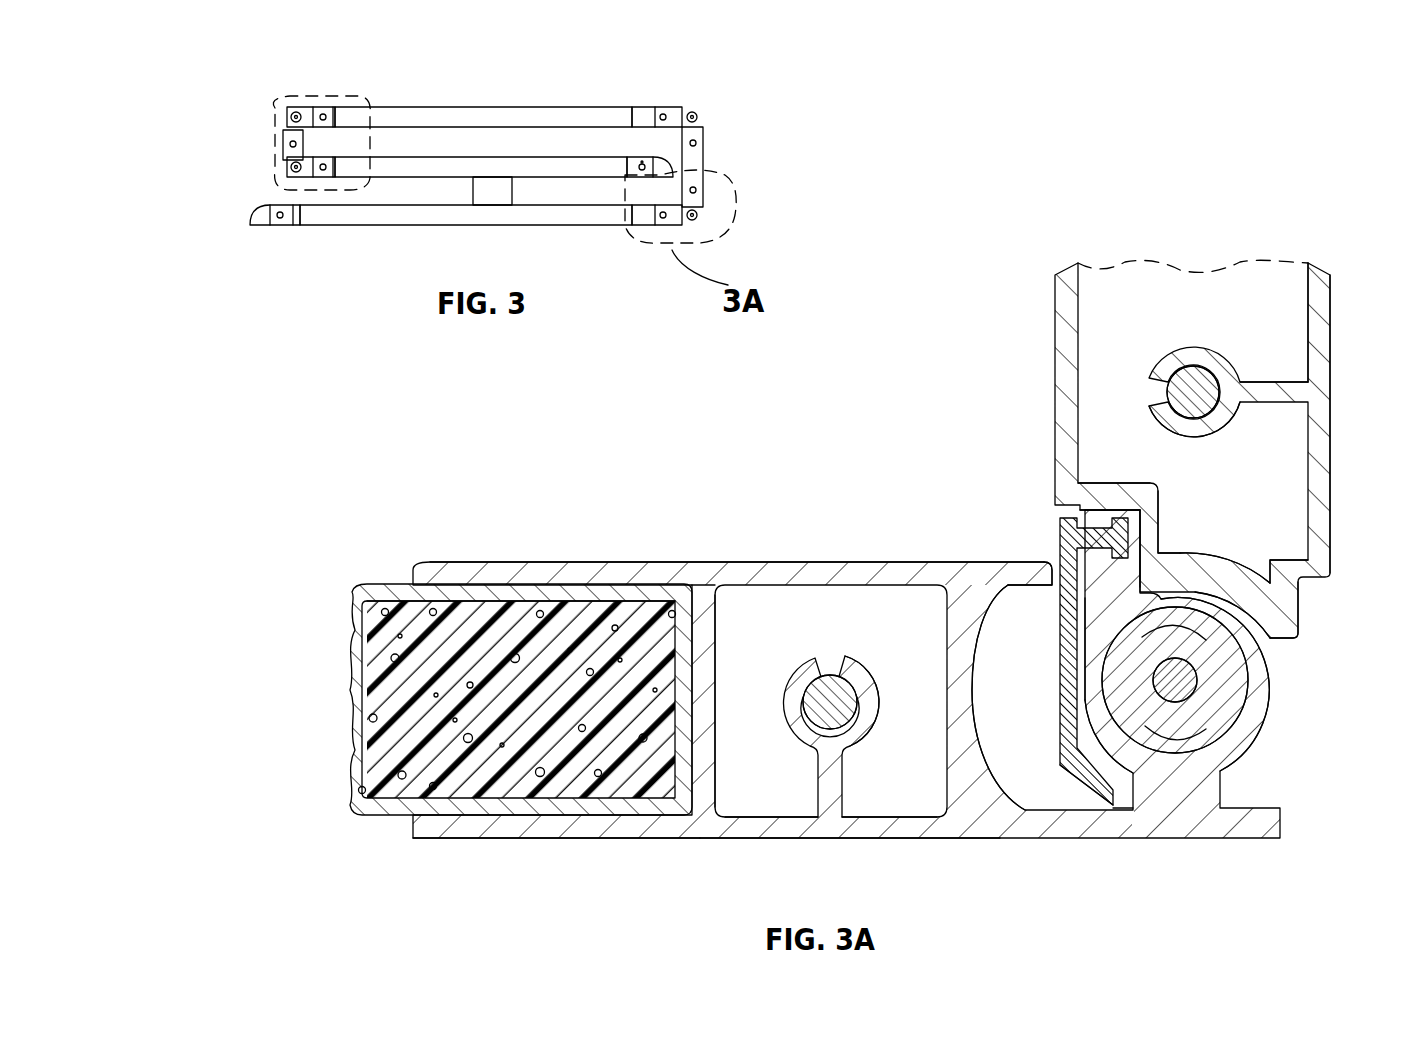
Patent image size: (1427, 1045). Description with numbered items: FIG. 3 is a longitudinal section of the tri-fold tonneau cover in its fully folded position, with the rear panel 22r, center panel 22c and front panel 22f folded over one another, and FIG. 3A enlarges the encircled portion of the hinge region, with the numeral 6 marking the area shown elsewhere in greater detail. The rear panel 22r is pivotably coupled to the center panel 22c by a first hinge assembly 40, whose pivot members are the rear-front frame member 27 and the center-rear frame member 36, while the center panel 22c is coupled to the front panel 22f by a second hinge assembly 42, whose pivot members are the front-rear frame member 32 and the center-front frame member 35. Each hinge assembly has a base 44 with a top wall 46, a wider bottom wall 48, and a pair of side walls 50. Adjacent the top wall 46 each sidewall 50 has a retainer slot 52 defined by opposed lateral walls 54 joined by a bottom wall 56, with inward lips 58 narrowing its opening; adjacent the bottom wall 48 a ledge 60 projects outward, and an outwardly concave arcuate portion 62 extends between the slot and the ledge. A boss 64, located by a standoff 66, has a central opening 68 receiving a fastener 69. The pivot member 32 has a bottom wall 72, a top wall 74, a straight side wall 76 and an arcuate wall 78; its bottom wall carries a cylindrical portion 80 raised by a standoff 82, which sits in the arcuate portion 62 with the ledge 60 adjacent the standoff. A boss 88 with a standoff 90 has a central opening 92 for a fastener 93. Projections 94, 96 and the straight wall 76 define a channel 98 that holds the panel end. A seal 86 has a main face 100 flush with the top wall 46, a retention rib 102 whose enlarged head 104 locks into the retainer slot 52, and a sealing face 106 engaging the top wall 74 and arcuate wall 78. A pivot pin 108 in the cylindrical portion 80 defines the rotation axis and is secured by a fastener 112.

In FIG. 3, the support system 6 is at (318, 95).
In FIG. 3, the center panel 22c is at (488, 105).
In FIG. 3, the rear panel 22r is at (551, 155).
In FIG. 3, the front panel 22f is at (381, 203).
In FIG. 3A, the front panel 22f is at (402, 583).
In FIG. 3, the rear-front frame member 27 is at (292, 183).
In FIG. 3, the front-rear frame member 32 is at (712, 223).
In FIG. 3A, the front-rear frame member 32 is at (757, 540).
In FIG. 3, the center-front frame member 35 is at (702, 101).
In FIG. 3, the center-rear frame member 36 is at (292, 103).
In FIG. 3, the first hinge assembly 40 is at (469, 150).
In FIG. 3, the second hinge assembly 42 is at (735, 168).
In FIG. 3, the base 44 is at (283, 143).
In FIG. 3A, the top wall 46 is at (1062, 300).
In FIG. 3A, the bottom wall 48 is at (1325, 295).
In FIG. 3A, the side walls 50 is at (1217, 560).
In FIG. 3A, the retainer slot 52 is at (1197, 680).
In FIG. 3A, the lateral walls 54 is at (1110, 493).
In FIG. 3A, the bottom wall 56 is at (1213, 546).
In FIG. 3A, the lips 58 is at (1058, 563).
In FIG. 3A, the ledge 60 is at (1280, 625).
In FIG. 3A, the arcuate portion 62 is at (1312, 528).
In FIG. 3A, the boss 64 is at (1150, 345).
In FIG. 3A, the standoff 66 is at (1300, 345).
In FIG. 3A, the central opening 68 is at (1175, 348).
In FIG. 3A, the fastener 69 is at (1196, 370).
In FIG. 3A, the bottom wall 72 is at (870, 822).
In FIG. 3A, the top wall 74 is at (836, 562).
In FIG. 3A, the straight side wall 76 is at (716, 752).
In FIG. 3A, the arcuate wall 78 is at (962, 737).
In FIG. 3A, the cylindrical portion 80 is at (1110, 622).
In FIG. 3A, the standoff 82 is at (1108, 795).
In FIG. 3A, the seal 86 is at (1048, 597).
In FIG. 3A, the boss 88 is at (882, 618).
In FIG. 3A, the standoff 90 is at (832, 790).
In FIG. 3A, the central opening 92 is at (832, 680).
In FIG. 3A, the fastener 93 is at (842, 722).
In FIG. 3A, the projection 94 is at (555, 562).
In FIG. 3A, the projection 96 is at (437, 828).
In FIG. 3A, the channel 98 is at (678, 665).
In FIG. 3A, the main face 100 is at (1105, 625).
In FIG. 3A, the retention rib 102 is at (1095, 508).
In FIG. 3A, the head 104 is at (1113, 493).
In FIG. 3A, the sealing face 106 is at (1147, 790).
In FIG. 3A, the pivot pin 108 is at (1133, 652).
In FIG. 3A, the fastener 112 is at (1247, 740).